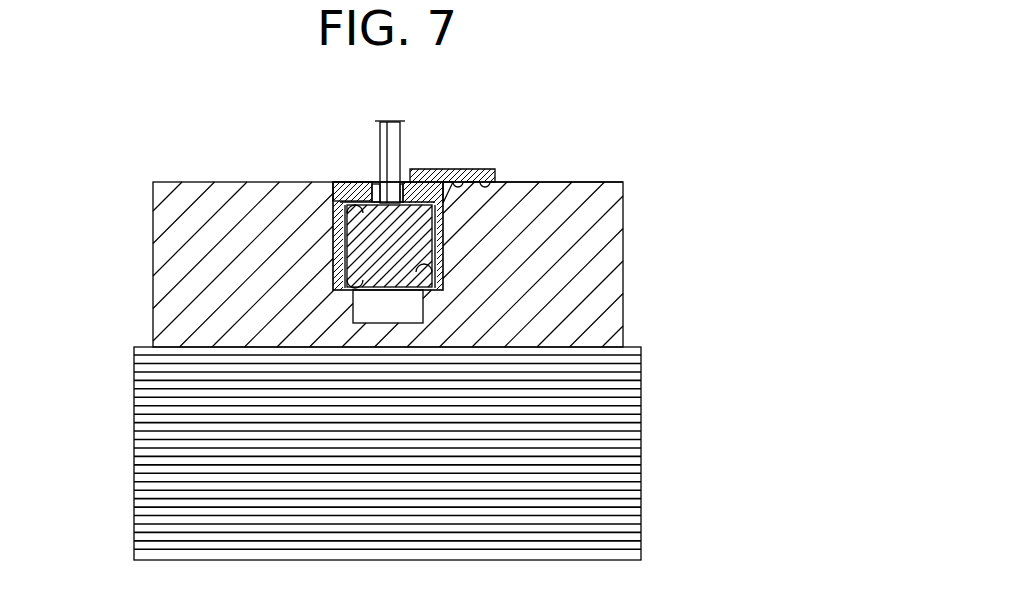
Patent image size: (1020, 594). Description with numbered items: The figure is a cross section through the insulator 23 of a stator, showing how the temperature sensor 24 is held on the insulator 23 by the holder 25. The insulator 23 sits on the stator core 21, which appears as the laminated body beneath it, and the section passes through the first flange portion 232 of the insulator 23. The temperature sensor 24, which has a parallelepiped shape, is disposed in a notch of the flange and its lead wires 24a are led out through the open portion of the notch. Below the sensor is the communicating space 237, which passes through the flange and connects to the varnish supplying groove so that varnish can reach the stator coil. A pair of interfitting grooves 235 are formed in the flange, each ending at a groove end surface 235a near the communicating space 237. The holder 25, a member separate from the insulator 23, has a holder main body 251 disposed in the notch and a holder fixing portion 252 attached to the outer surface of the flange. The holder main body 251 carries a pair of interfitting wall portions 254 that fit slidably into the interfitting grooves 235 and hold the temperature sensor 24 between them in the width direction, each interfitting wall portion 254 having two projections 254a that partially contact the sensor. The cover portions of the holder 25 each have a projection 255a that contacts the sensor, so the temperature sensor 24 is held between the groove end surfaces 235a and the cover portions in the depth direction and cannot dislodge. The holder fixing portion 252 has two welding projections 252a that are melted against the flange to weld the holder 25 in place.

The stator core 21 is at (642, 462).
The insulator 23 is at (167, 182).
The first flange portion 232 is at (583, 197).
The interfitting groove 235 is at (333, 230).
The groove end surface 235a is at (352, 302).
The communicating space 237 is at (387, 312).
The temperature sensor 24 is at (352, 203).
The lead wires 24a is at (377, 202).
The holder 25 is at (433, 200).
The holder main body 251 is at (338, 210).
The holder fixing portion 252 is at (473, 168).
The welding projection 252a is at (492, 188).
The interfitting wall portion 254 is at (335, 222).
The projection 254a is at (340, 205).
The projection 255a is at (374, 203).